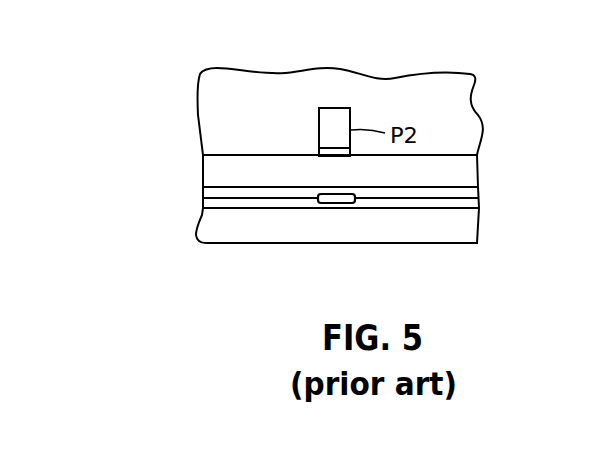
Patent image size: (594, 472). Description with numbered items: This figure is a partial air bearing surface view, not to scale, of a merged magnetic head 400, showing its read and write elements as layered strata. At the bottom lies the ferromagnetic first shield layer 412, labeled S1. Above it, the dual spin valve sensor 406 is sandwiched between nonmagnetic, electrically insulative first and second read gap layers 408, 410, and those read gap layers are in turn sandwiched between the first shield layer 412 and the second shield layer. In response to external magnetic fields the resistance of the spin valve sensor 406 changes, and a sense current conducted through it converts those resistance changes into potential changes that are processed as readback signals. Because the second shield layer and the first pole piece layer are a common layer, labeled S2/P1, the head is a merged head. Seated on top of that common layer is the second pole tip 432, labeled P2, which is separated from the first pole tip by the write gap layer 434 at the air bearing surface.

The merged magnetic head 400 is at (505, 83).
The spin valve sensor 406 is at (337, 203).
The first read gap layer 408 is at (252, 208).
The second read gap layer 410 is at (443, 192).
The first shield layer 412 is at (467, 220).
The second pole tip 432 is at (337, 120).
The write gap layer 434 is at (333, 148).